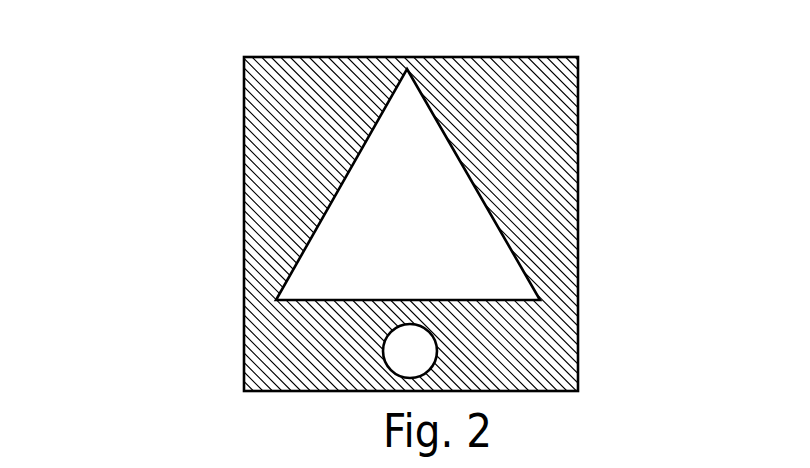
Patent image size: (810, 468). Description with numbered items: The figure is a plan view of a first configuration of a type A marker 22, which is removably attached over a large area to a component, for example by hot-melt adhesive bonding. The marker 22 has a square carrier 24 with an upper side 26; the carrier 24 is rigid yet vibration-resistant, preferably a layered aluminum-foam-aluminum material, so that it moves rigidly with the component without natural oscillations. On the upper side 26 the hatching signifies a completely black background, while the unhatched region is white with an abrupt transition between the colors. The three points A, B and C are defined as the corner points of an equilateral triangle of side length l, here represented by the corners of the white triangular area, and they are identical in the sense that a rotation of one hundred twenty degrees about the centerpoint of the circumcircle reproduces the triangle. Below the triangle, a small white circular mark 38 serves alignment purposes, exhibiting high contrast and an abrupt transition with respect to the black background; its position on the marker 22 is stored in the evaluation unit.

The marker 22 is at (702, 155).
The square carrier 24 is at (578, 280).
The upper side 26 is at (272, 167).
The mark 38 is at (403, 354).
The point A is at (406, 68).
The point B is at (276, 300).
The point C is at (540, 300).